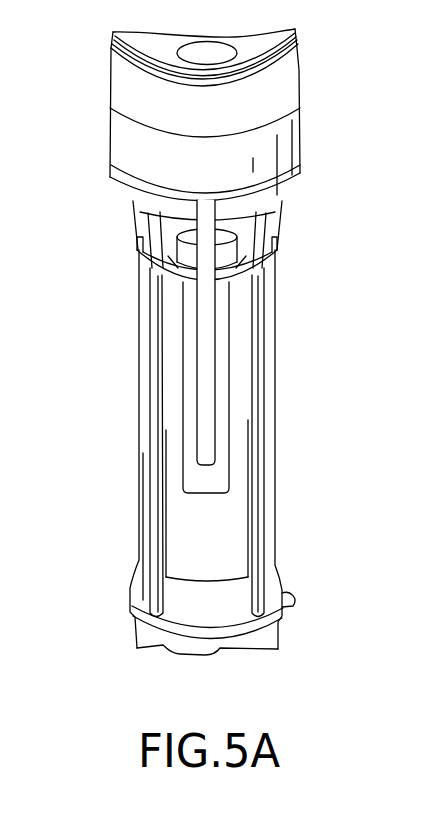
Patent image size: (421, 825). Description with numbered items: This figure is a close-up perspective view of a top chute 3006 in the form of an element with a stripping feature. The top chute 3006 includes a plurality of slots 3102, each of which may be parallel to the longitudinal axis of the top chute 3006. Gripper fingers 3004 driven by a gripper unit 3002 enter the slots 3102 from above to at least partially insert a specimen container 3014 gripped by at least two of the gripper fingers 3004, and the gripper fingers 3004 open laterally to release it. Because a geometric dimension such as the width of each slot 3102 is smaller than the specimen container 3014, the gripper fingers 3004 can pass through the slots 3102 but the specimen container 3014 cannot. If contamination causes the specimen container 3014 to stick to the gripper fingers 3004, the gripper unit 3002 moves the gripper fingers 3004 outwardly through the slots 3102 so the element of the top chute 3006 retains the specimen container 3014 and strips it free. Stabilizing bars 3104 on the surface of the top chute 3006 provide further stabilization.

The gripper unit 3002 is at (127, 140).
The top chute 3006 is at (143, 275).
The specimen container 3014 is at (227, 243).
The gripper fingers 3004 is at (207, 395).
The slots 3102 is at (183, 473).
The stabilizing bars 3104 is at (150, 560).